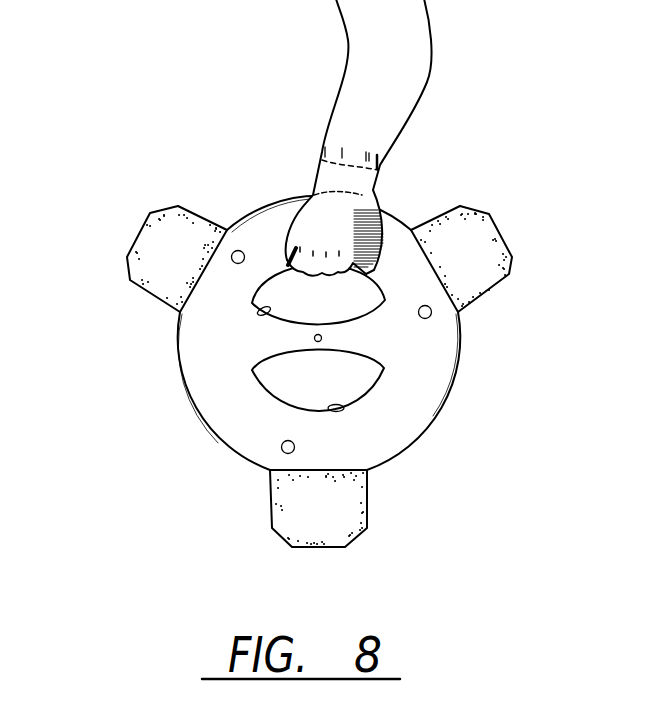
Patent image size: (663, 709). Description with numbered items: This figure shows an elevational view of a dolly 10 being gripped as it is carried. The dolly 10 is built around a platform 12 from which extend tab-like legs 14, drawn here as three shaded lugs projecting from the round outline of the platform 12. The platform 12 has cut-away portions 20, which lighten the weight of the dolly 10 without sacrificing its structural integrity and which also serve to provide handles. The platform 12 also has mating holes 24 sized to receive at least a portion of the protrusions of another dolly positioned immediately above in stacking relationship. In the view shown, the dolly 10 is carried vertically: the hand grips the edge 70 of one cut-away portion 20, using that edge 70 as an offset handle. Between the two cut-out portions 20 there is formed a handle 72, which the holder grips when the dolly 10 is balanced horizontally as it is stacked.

The dolly 10 is at (452, 424).
The platform 12 is at (377, 465).
The tab-like legs 14 is at (132, 246).
The cut-away portions 20 is at (257, 307).
The mating holes 24 is at (241, 250).
The edge 70 is at (376, 295).
The handle 72 is at (340, 340).